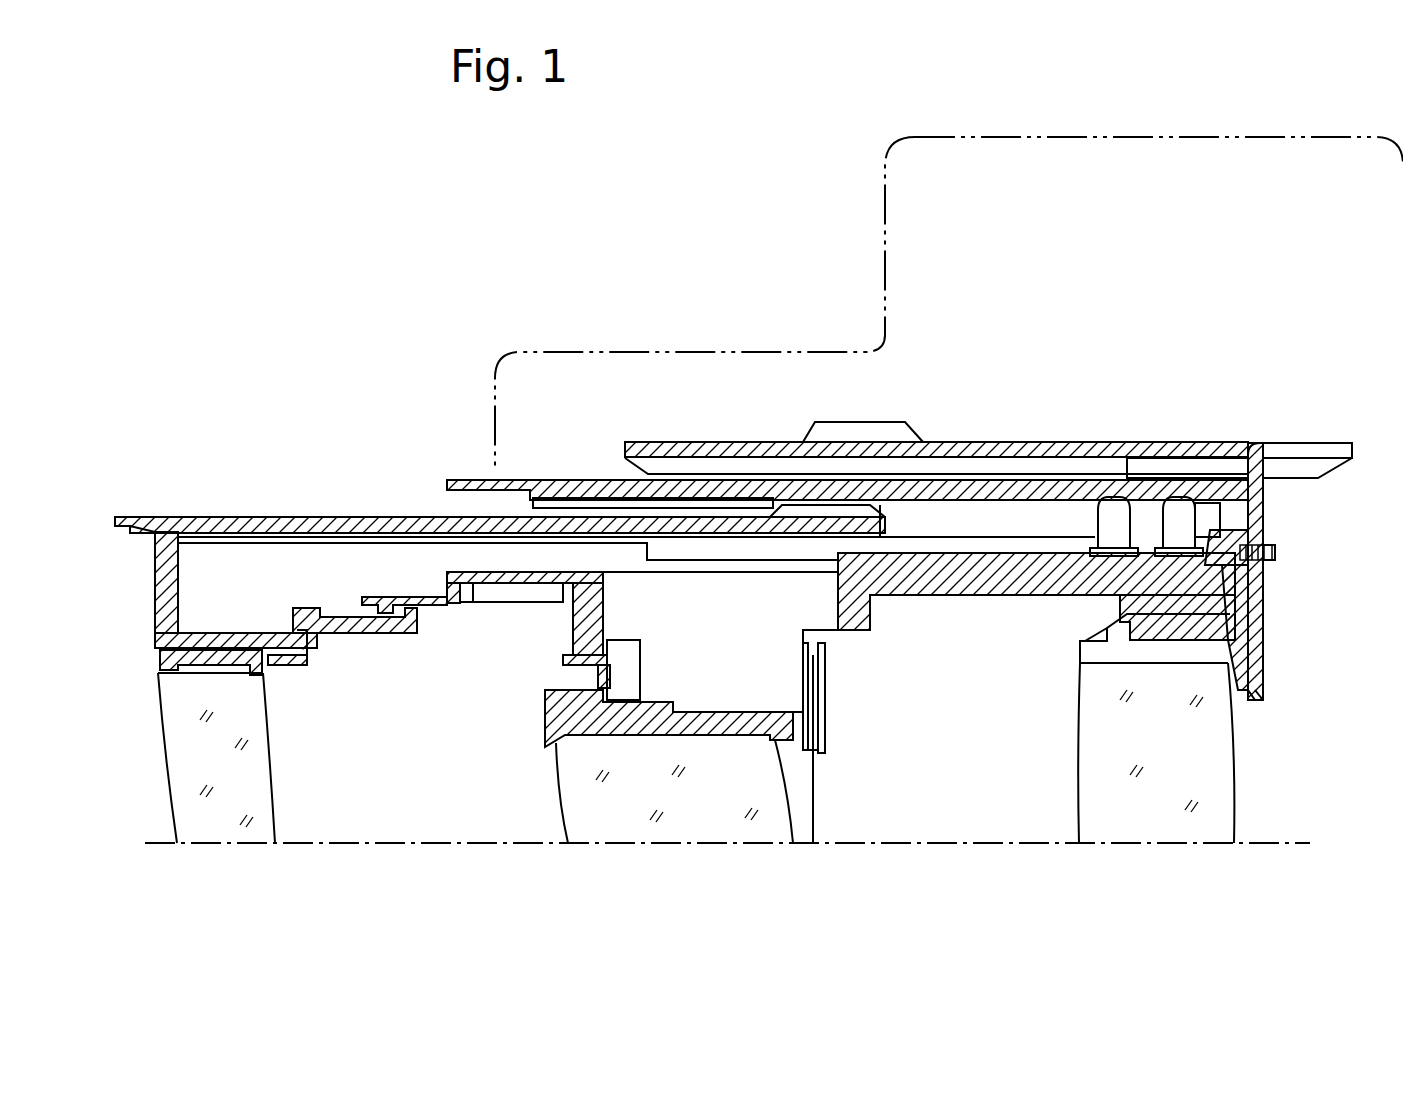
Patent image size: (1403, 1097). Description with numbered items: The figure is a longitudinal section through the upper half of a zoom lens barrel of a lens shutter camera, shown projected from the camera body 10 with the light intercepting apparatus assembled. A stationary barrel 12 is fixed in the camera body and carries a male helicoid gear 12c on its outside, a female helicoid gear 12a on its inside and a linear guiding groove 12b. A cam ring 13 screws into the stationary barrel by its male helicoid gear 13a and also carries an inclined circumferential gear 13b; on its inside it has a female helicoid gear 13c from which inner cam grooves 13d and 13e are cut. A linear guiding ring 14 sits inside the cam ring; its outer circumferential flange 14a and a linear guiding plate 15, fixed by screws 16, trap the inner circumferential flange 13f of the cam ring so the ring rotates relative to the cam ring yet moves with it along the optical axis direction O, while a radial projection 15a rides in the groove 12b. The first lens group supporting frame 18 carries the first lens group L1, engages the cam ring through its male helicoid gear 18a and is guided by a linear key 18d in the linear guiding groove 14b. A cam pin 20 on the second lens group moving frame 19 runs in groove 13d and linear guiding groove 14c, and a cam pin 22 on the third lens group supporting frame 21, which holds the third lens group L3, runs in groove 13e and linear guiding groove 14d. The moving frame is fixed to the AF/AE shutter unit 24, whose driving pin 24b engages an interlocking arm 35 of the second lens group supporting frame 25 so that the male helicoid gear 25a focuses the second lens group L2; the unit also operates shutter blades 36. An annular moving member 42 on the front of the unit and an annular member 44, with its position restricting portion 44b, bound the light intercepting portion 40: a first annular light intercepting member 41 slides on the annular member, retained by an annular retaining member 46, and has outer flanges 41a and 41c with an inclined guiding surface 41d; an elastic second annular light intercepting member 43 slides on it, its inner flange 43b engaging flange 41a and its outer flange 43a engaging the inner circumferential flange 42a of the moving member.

The camera body 10 is at (1225, 135).
The stationary barrel 12 is at (728, 440).
The female helicoid gear 12a is at (950, 470).
The linear guiding groove 12b is at (1305, 450).
The male helicoid gear 12c is at (890, 428).
The cam ring 13 is at (615, 478).
The male helicoid gear 13a is at (1160, 470).
The circumferential gear 13b is at (1259, 695).
The female helicoid gear 13c is at (595, 505).
The inner cam groove 13d is at (1050, 548).
The inner cam groove 13e is at (1190, 482).
The inner circumferential flange 13f is at (1250, 520).
The linear guiding ring 14 is at (1245, 625).
The outer circumferential flange 14a is at (1228, 508).
The linear guiding groove 14b is at (985, 537).
The linear guiding groove 14c is at (1100, 515).
The linear guiding groove 14d is at (1179, 526).
The linear guiding plate 15 is at (1253, 597).
The radial projection 15a is at (1253, 442).
The screws 16 is at (1266, 580).
The first lens group supporting frame 18 is at (402, 515).
The male helicoid gear 18a is at (840, 505).
The linear key 18d is at (345, 540).
The second lens group moving frame 19 is at (948, 597).
The cam pin 20 is at (1078, 548).
The third lens group supporting frame 21 is at (1258, 660).
The cam pin 22 is at (1256, 545).
The AF/AE shutter unit 24 is at (822, 672).
The driving pin 24b is at (630, 655).
The second lens group supporting frame 25 is at (790, 740).
The male helicoid gear 25a is at (745, 735).
The interlocking arm 35 is at (608, 672).
The shutter blades 36 is at (820, 752).
The light intercepting portion 40 is at (395, 580).
The first annular light intercepting member 41 is at (345, 634).
The outer circumferential flange 41a is at (408, 640).
The outer circumferential flange 41c is at (300, 605).
The inclined guiding surface 41d is at (412, 622).
The annular moving member 42 is at (470, 572).
The inner circumferential flange 42a is at (466, 603).
The second annular light intercepting member 43 is at (398, 608).
The outer circumferential flange 43a is at (475, 580).
The inner circumferential flange 43b is at (392, 612).
The annular member 44 is at (255, 640).
The position restricting portion 44b is at (200, 630).
The annular retaining member 46 is at (315, 662).
The first lens group L1 is at (272, 812).
The second lens group L2 is at (572, 812).
The third lens group L3 is at (1082, 812).
The optical axis direction O is at (905, 835).